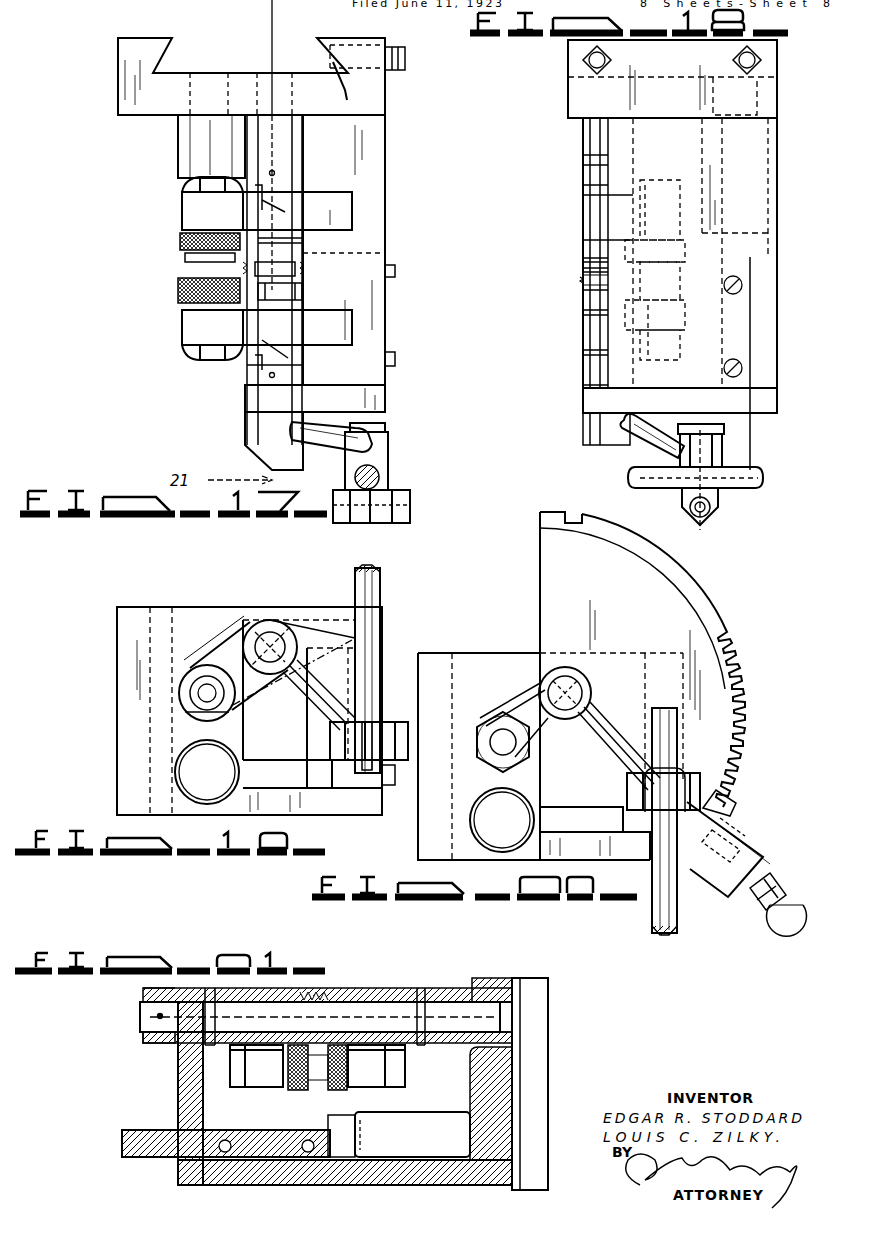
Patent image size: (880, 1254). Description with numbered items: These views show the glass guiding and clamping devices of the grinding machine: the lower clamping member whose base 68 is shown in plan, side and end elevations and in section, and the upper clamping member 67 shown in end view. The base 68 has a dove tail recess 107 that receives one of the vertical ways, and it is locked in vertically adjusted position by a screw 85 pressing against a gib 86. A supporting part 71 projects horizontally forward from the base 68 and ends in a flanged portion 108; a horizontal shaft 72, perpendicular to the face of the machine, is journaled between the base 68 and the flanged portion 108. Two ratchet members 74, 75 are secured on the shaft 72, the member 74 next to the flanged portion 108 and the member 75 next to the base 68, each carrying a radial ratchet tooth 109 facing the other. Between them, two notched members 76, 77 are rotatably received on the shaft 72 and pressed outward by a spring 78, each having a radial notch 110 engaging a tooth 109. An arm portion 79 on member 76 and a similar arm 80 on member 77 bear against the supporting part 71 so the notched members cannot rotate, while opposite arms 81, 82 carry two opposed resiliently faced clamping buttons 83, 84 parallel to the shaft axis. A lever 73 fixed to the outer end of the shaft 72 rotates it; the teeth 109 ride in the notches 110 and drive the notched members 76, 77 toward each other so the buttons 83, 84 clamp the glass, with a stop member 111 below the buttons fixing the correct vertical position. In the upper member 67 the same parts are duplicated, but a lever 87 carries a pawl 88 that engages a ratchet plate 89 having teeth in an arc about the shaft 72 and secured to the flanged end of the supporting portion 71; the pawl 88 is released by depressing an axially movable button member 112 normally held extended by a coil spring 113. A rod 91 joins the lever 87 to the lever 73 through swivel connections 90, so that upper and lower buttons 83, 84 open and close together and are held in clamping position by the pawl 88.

In FIG. 20, the upper guiding and clamping member 67 is at (437, 654).
In FIG. 17, the lower guiding and clamping member base 68 is at (378, 106).
In FIG. 18, the lower guiding and clamping member base 68 is at (572, 94).
In FIG. 19, the lower guiding and clamping member base 68 is at (118, 790).
In FIG. 21, the lower guiding and clamping member base 68 is at (497, 980).
In FIG. 17, the supporting part 71 is at (377, 183).
In FIG. 18, the supporting part 71 is at (762, 177).
In FIG. 19, the supporting part 71 is at (362, 808).
In FIG. 20, the supporting part 71 is at (623, 862).
In FIG. 21, the supporting part 71 is at (347, 1188).
In FIG. 17, the shaft 72 is at (295, 272).
In FIG. 18, the shaft 72 is at (588, 272).
In FIG. 19, the shaft 72 is at (267, 645).
In FIG. 20, the shaft 72 is at (573, 707).
In FIG. 21, the shaft 72 is at (147, 1018).
In FIG. 17, the lever 73 is at (387, 438).
In FIG. 18, the lever 73 is at (722, 447).
In FIG. 19, the lever 73 is at (310, 707).
In FIG. 20, the lever 73 is at (598, 714).
In FIG. 21, the lever 73 is at (160, 1045).
In FIG. 17, the ratchet member 74 is at (253, 375).
In FIG. 18, the ratchet member 74 is at (588, 377).
In FIG. 21, the ratchet member 74 is at (220, 1053).
In FIG. 17, the ratchet member 75 is at (287, 168).
In FIG. 18, the ratchet member 75 is at (588, 175).
In FIG. 21, the ratchet member 75 is at (423, 1047).
In FIG. 17, the notched member 76 is at (288, 295).
In FIG. 18, the notched member 76 is at (588, 300).
In FIG. 21, the notched member 76 is at (297, 988).
In FIG. 17, the notched member 77 is at (303, 243).
In FIG. 18, the notched member 77 is at (588, 243).
In FIG. 21, the notched member 77 is at (367, 990).
In FIG. 17, the spring 78 is at (243, 270).
In FIG. 18, the spring 78 is at (588, 280).
In FIG. 21, the spring 78 is at (322, 990).
In FIG. 17, the arm portion 79 is at (340, 330).
In FIG. 18, the arm portion 79 is at (588, 332).
In FIG. 19, the arm portion 79 is at (313, 618).
In FIG. 17, the arm 80 is at (347, 210).
In FIG. 18, the arm 80 is at (588, 213).
In FIG. 17, the arm 81 is at (182, 332).
In FIG. 19, the arm 81 is at (230, 653).
In FIG. 20, the arm 81 is at (512, 693).
In FIG. 21, the arm 81 is at (257, 1090).
In FIG. 17, the arm 82 is at (188, 212).
In FIG. 21, the arm 82 is at (393, 1083).
In FIG. 17, the clamping button 83 is at (177, 298).
In FIG. 18, the clamping button 83 is at (692, 308).
In FIG. 19, the clamping button 83 is at (190, 700).
In FIG. 20, the clamping button 83 is at (477, 758).
In FIG. 21, the clamping button 83 is at (347, 1090).
In FIG. 17, the clamping button 84 is at (178, 243).
In FIG. 18, the clamping button 84 is at (687, 245).
In FIG. 21, the clamping button 84 is at (294, 1090).
In FIG. 17, the screw 85 is at (402, 53).
In FIG. 17, the gib 86 is at (327, 43).
In FIG. 20, the lever 87 is at (745, 853).
In FIG. 20, the pawl 88 is at (727, 803).
In FIG. 20, the ratchet plate 89 is at (745, 730).
In FIG. 17, the swivel connection 90 is at (387, 477).
In FIG. 18, the swivel connection 90 is at (682, 503).
In FIG. 19, the swivel connection 90 is at (377, 730).
In FIG. 20, the swivel connection 90 is at (680, 773).
In FIG. 17, the rod 91 is at (353, 477).
In FIG. 18, the rod 91 is at (743, 490).
In FIG. 19, the rod 91 is at (378, 583).
In FIG. 20, the rod 91 is at (658, 913).
In FIG. 17, the dove tail recess 107 is at (178, 55).
In FIG. 21, the dove tail recess 107 is at (547, 1002).
In FIG. 17, the flanged portion 108 is at (253, 402).
In FIG. 18, the flanged portion 108 is at (767, 400).
In FIG. 19, the flanged portion 108 is at (247, 732).
In FIG. 21, the flanged portion 108 is at (178, 1087).
In FIG. 17, the radial ratchet tooth 109 is at (255, 200).
In FIG. 17, the radial notch 110 is at (287, 188).
In FIG. 17, the stop member 111 is at (188, 160).
In FIG. 19, the stop member 111 is at (207, 772).
In FIG. 20, the stop member 111 is at (502, 820).
In FIG. 21, the stop member 111 is at (399, 1134).
In FIG. 20, the button member 112 is at (786, 935).
In FIG. 20, the coil spring 113 is at (762, 918).